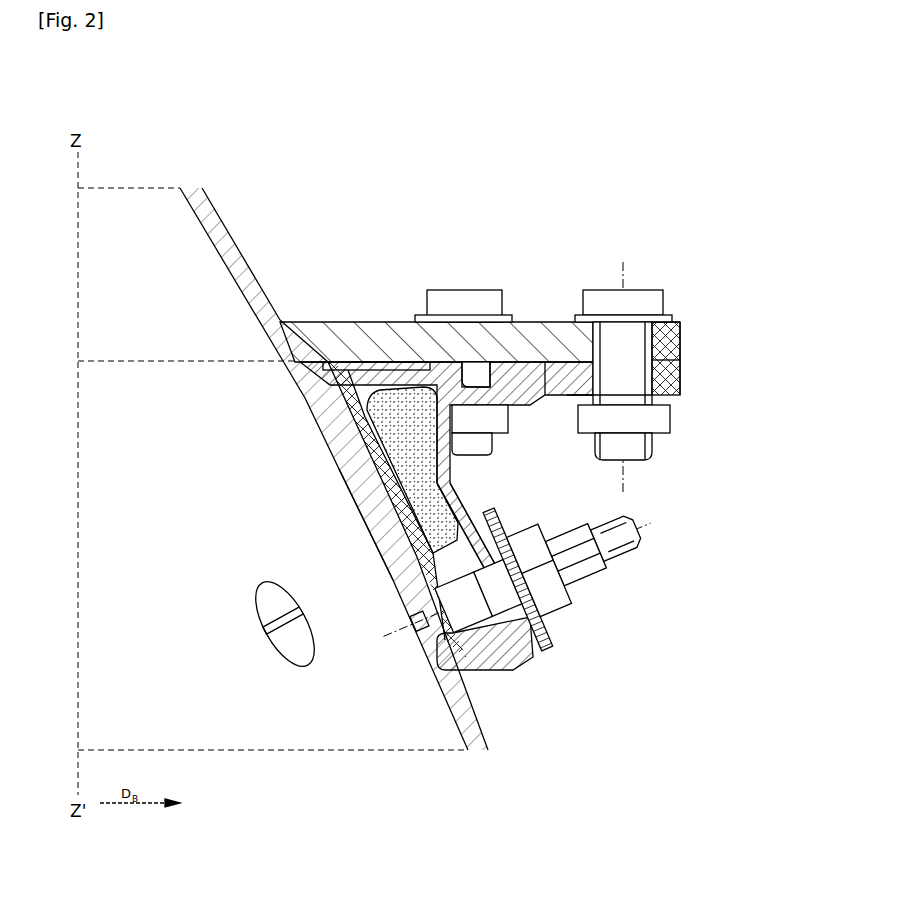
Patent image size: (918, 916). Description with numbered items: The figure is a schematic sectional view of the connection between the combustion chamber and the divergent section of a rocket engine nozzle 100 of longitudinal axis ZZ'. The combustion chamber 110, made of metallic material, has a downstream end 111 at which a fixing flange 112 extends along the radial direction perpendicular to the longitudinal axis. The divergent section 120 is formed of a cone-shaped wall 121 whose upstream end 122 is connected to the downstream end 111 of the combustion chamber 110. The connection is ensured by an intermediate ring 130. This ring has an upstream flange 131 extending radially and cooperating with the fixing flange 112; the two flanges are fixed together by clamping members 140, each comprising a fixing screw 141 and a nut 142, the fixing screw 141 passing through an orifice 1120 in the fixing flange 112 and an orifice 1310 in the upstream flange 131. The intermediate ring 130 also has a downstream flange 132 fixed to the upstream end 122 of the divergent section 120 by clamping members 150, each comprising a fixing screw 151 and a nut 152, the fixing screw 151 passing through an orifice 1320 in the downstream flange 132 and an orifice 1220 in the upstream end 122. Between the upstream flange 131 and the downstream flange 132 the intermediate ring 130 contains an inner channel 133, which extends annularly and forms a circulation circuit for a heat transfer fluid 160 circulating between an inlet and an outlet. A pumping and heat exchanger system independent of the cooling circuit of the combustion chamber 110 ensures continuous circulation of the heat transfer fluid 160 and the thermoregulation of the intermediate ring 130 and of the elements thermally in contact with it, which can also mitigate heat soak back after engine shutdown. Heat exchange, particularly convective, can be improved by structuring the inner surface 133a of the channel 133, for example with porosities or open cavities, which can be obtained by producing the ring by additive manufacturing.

The rocket engine nozzle 100 is at (558, 118).
The combustion chamber 110 is at (459, 452).
The downstream end of the combustion chamber 111 is at (237, 253).
The fixing flange 112 is at (509, 338).
The orifice 1120 is at (673, 312).
The divergent section 120 is at (417, 535).
The cone-shaped wall 121 is at (480, 727).
The upstream end of the divergent section 122 is at (348, 470).
The orifice 1220 is at (443, 687).
The intermediate ring 130 is at (506, 536).
The upstream flange 131 is at (547, 368).
The orifice 1310 is at (572, 402).
The downstream flange 132 is at (522, 673).
The orifice 1320 is at (495, 672).
The inner channel 133 is at (365, 511).
The inner surface of the channel 133a is at (360, 505).
The clamping member 140 is at (675, 377).
The fixing screw 141 is at (684, 374).
The nut 142 is at (658, 420).
The clamping member 150 is at (536, 582).
The fixing screw 151 is at (548, 648).
The nut 152 is at (560, 602).
The heat transfer fluid 160 is at (412, 470).